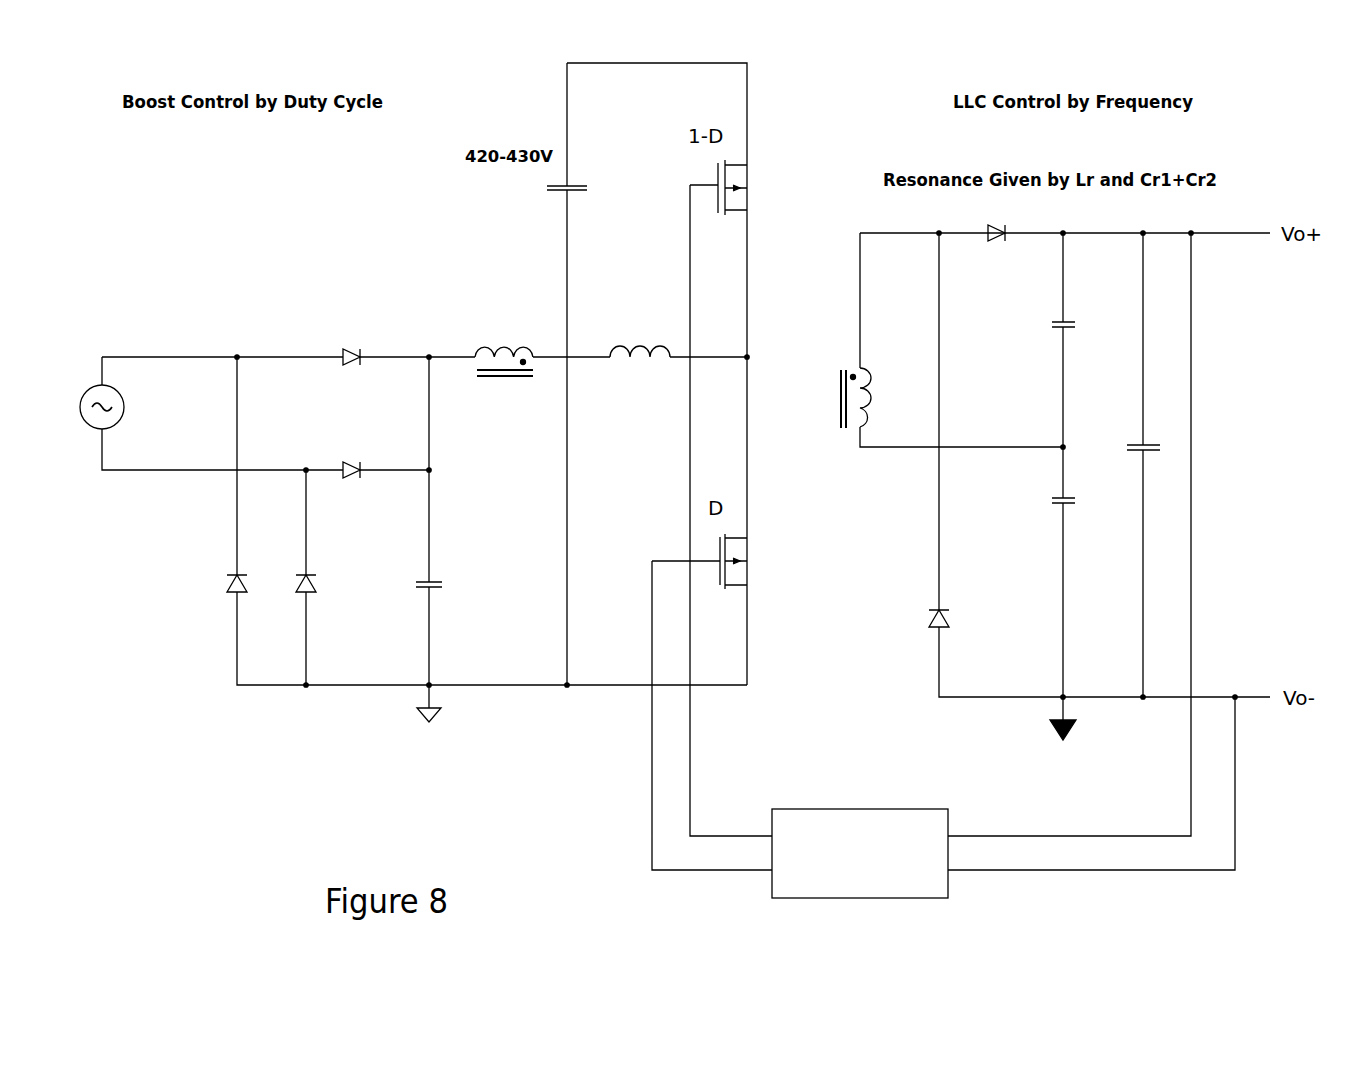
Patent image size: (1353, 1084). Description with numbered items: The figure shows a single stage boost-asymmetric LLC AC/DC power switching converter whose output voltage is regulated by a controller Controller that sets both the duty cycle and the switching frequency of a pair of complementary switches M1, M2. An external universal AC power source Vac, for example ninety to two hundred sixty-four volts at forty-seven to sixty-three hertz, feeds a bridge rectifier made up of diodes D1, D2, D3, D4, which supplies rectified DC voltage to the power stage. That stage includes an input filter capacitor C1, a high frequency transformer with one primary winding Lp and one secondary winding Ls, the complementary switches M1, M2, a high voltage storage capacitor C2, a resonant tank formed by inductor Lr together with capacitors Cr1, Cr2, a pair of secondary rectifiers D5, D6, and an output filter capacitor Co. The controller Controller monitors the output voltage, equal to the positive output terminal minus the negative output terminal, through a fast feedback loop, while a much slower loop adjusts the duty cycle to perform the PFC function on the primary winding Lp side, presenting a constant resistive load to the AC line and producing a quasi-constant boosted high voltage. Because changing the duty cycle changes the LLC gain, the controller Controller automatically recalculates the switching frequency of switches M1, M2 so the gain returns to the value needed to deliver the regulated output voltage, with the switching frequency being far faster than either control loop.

The external universal AC power source Vac is at (143, 415).
The bridge rectifier diode D1 is at (351, 360).
The bridge rectifier diode D2 is at (351, 473).
The bridge rectifier diode D3 is at (229, 584).
The bridge rectifier diode D4 is at (297, 584).
The input filter capacitor C1 is at (436, 574).
The high voltage storage capacitor C2 is at (569, 179).
The primary winding Lp is at (504, 347).
The resonant inductor Lr is at (640, 338).
The complementary switch M1 is at (714, 561).
The complementary switch M2 is at (733, 187).
The controller Controller is at (860, 853).
The secondary winding Ls is at (869, 398).
The secondary rectifier D5 is at (995, 224).
The secondary rectifier D6 is at (930, 608).
The resonant capacitor Cr1 is at (1074, 313).
The resonant capacitor Cr2 is at (1074, 491).
The output filter capacitor Co is at (1148, 437).